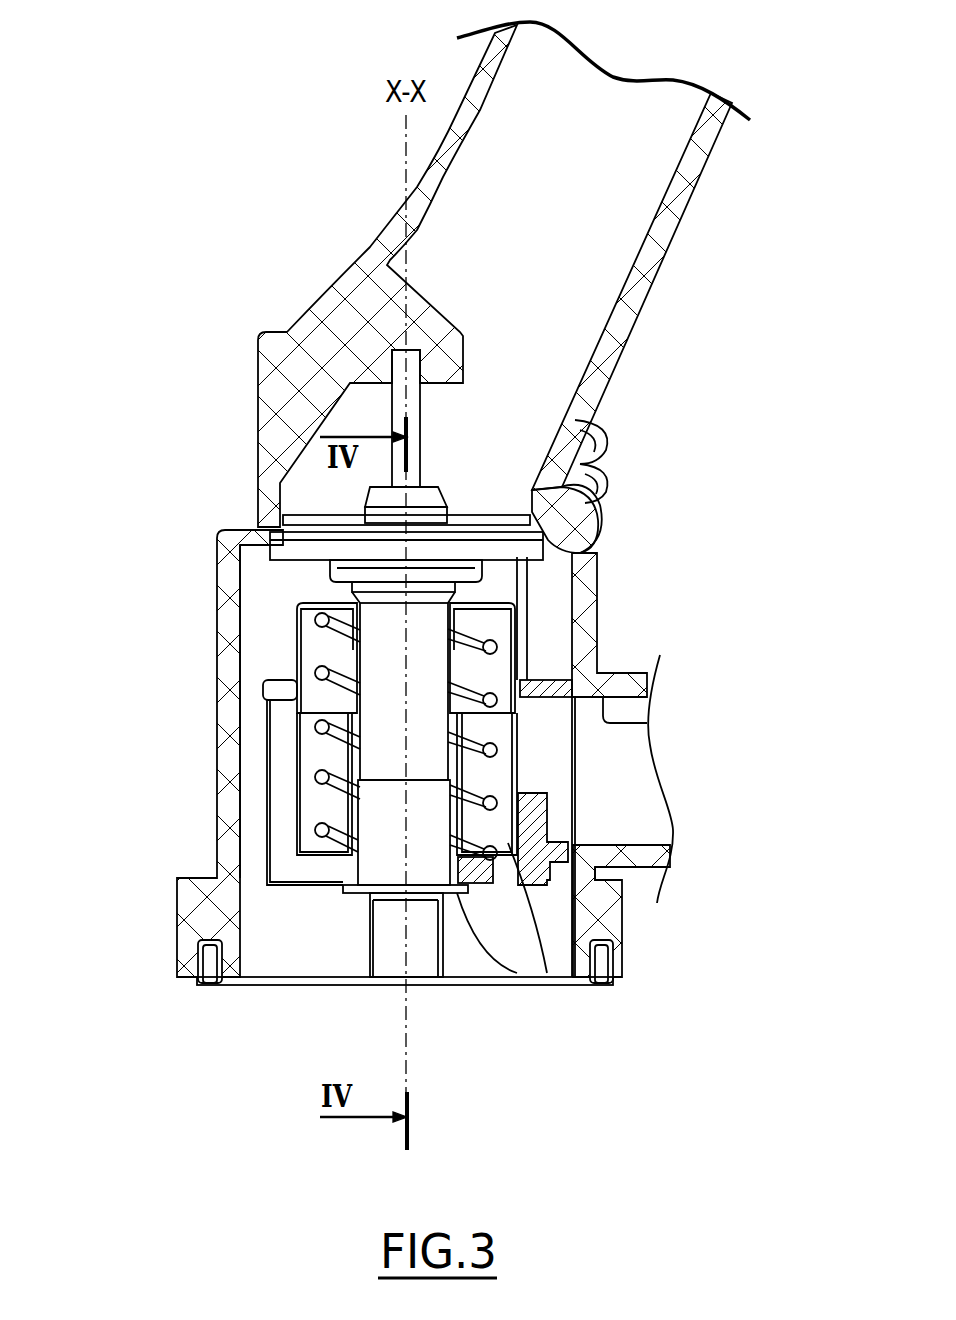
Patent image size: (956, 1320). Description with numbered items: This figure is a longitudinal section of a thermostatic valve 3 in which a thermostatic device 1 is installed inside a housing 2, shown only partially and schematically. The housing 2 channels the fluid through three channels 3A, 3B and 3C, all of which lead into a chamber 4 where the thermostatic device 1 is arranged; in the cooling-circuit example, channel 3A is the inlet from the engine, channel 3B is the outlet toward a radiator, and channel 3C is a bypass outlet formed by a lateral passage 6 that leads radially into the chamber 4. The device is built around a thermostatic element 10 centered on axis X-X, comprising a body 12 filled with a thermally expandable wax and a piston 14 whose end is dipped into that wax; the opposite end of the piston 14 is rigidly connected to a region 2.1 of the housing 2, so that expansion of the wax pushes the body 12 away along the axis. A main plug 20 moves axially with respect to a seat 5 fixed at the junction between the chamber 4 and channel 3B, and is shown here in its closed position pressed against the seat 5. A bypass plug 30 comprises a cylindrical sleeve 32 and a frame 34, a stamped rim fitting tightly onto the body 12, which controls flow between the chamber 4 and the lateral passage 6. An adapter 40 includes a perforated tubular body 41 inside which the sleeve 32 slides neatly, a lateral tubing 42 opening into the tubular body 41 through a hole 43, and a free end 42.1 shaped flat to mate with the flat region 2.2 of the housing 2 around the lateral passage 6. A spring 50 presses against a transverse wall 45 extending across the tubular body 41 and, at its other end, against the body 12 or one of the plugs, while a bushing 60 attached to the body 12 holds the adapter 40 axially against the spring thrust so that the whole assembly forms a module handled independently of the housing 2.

The thermostatic device 1 is at (383, 900).
The housing 2 is at (215, 568).
The region of the housing 2.1 is at (367, 372).
The region of the housing 2.2 is at (585, 673).
The thermostatic valve 3 is at (247, 342).
The fluid flow channel 3A is at (285, 985).
The fluid flow channel 3B is at (510, 496).
The fluid flow channel 3C is at (624, 822).
The chamber 4 is at (258, 660).
The seat 5 is at (528, 540).
The lateral passage 6 is at (606, 718).
The thermostatic element 10 is at (368, 490).
The body 12 is at (385, 653).
The piston 14 is at (505, 490).
The main plug 20 is at (277, 537).
The bypass plug 30 is at (520, 600).
The cylindrical sleeve 32 is at (518, 637).
The frame 34 is at (560, 580).
The adapter 40 is at (277, 868).
The tubular body 41 is at (530, 845).
The lateral tubing 42 is at (543, 683).
The free end 42.1 is at (597, 862).
The hole 43 is at (528, 765).
The transverse wall 45 is at (473, 880).
The spring 50 is at (303, 776).
The bushing 60 is at (352, 895).